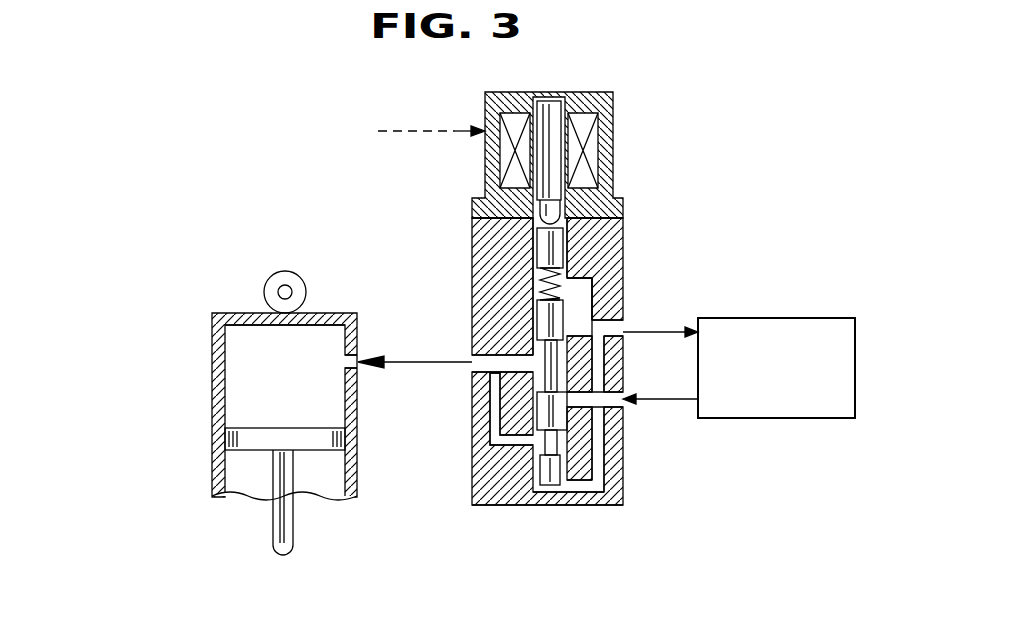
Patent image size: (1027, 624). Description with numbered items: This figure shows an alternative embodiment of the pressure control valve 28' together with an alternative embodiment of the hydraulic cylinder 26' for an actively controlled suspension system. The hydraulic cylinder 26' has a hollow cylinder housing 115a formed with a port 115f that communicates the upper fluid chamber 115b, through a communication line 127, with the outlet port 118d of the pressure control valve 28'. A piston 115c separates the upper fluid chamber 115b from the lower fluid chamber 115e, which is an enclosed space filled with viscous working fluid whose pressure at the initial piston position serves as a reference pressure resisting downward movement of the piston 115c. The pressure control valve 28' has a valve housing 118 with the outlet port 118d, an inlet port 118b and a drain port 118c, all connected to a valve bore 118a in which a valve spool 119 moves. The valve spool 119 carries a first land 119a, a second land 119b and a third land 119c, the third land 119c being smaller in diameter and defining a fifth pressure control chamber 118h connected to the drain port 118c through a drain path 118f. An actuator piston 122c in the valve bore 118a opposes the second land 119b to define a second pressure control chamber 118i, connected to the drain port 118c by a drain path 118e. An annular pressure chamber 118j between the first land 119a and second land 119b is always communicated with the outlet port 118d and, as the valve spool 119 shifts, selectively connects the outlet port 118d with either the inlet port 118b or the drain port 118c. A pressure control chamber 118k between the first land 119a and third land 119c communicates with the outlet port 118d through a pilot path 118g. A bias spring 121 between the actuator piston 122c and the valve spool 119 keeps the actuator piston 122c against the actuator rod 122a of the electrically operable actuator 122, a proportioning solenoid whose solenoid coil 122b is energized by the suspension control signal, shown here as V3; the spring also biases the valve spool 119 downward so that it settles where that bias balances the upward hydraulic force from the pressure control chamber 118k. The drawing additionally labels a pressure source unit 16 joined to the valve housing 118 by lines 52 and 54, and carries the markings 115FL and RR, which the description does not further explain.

The pressure control valve 28' is at (583, 318).
The valve housing 118 is at (478, 507).
The electrically operable actuator 122 is at (614, 120).
The actuator rod 122a is at (560, 207).
The solenoid coil 122b is at (583, 92).
The actuator piston 122c is at (540, 215).
The control signal V3 is at (431, 120).
The valve spool 119 is at (479, 387).
The first land 119a is at (535, 397).
The second land 119b is at (540, 312).
The third land 119c is at (518, 506).
The bias spring 121 is at (540, 278).
The valve bore 118a is at (540, 243).
The inlet port 118b is at (608, 405).
The drain port 118c is at (623, 296).
The outlet port 118d is at (487, 355).
The drain path 118e is at (623, 270).
The drain path 118f is at (568, 507).
The pilot path 118g is at (478, 474).
The fifth pressure control chamber 118h is at (582, 506).
The second pressure control chamber 118i is at (623, 232).
The annular pressure chamber 118j is at (623, 316).
The pressure control chamber 118k is at (541, 503).
The pressure source unit 16 is at (856, 363).
The return line 54 is at (659, 334).
The supply line 52 is at (677, 398).
The hydraulic cylinder 26' is at (301, 396).
The cylinder housing 115a is at (215, 392).
The upper fluid chamber 115b is at (228, 352).
The piston 115c is at (346, 440).
The lower fluid chamber 115e is at (230, 476).
The port 115f is at (362, 352).
The front-left cylinder 115FL is at (312, 312).
The rear-right cylinder RR is at (369, 250).
The communication line 127 is at (390, 372).